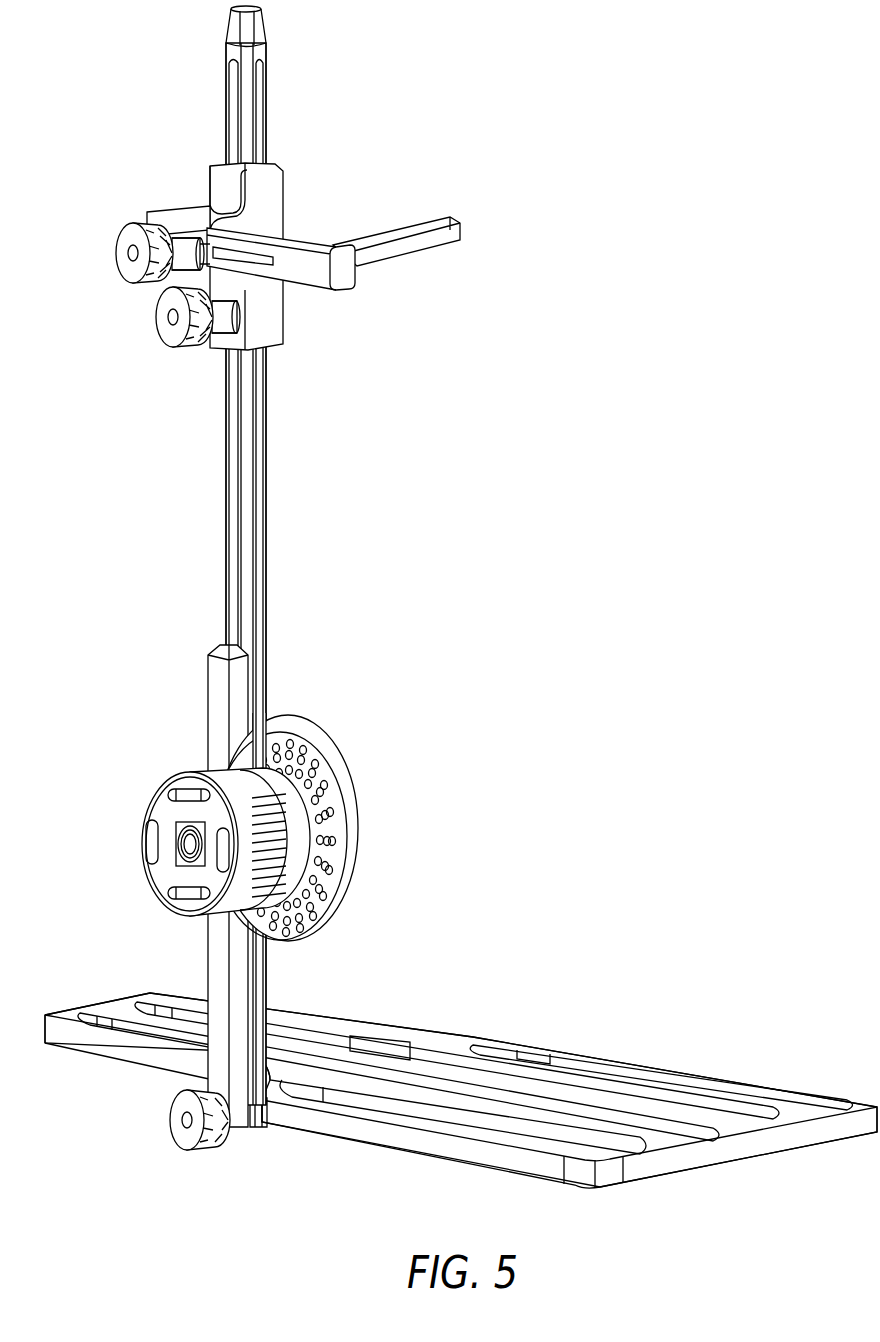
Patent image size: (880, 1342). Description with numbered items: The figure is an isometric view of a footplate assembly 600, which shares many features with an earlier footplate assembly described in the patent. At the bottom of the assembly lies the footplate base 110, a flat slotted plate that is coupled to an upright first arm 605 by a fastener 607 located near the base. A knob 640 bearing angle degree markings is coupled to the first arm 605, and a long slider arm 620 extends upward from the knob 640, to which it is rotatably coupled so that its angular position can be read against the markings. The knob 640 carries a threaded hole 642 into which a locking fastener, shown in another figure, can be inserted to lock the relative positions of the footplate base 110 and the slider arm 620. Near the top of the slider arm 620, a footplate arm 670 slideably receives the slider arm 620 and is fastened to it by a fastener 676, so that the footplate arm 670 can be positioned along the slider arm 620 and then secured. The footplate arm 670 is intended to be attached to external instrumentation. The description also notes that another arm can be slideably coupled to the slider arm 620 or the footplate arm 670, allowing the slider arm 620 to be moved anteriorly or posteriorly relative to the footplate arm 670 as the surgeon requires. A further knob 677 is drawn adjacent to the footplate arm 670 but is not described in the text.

The footplate base 110 is at (625, 1052).
The footplate assembly 600 is at (673, 555).
The first arm 605 is at (208, 958).
The fastener 607 is at (180, 1128).
The slider arm 620 is at (222, 500).
The knob 640 is at (185, 774).
The threaded hole 642 is at (172, 866).
The footplate arm 670 is at (415, 262).
The fastener 676 is at (165, 322).
The clamp knob 677 is at (125, 268).